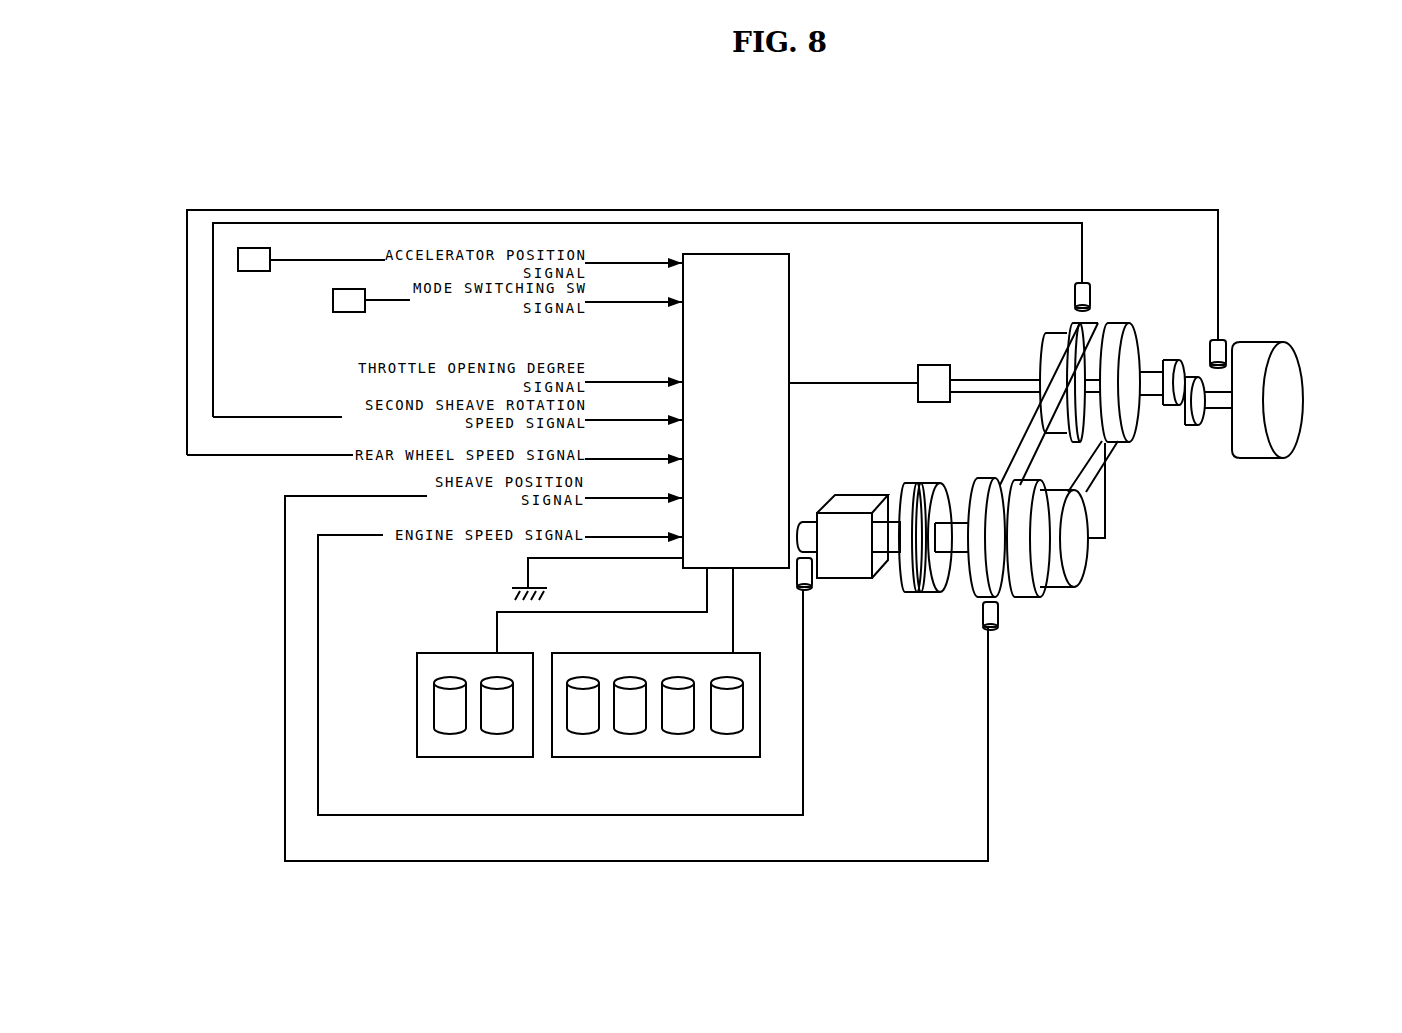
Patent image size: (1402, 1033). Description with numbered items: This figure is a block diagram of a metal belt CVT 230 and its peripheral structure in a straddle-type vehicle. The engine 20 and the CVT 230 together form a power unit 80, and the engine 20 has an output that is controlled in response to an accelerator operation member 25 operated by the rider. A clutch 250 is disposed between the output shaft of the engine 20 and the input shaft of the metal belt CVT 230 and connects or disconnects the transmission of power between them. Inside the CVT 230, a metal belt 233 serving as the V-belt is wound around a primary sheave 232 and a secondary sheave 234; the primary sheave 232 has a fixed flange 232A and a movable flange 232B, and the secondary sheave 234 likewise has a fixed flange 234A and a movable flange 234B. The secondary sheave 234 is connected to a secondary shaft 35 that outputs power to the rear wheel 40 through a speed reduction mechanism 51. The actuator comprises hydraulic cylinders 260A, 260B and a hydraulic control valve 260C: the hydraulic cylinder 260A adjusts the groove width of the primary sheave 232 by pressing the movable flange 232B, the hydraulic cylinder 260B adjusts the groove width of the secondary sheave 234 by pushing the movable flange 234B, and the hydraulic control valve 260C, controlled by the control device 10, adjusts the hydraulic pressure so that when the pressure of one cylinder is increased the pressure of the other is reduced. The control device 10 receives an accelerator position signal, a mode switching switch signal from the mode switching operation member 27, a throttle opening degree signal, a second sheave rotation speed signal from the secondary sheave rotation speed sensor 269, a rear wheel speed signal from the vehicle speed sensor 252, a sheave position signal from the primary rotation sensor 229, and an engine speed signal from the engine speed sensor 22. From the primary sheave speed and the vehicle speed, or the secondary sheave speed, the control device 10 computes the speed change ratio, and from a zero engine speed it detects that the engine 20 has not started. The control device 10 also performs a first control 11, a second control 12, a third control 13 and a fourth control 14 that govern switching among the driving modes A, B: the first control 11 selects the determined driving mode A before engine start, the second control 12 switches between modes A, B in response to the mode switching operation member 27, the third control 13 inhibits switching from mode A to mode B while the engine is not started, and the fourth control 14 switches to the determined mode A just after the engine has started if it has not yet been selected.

The control device 10 is at (789, 265).
The engine 20 is at (842, 578).
The engine speed sensor 22 is at (790, 578).
The accelerator operation member 25 is at (250, 271).
The mode switching operation member 27 is at (352, 288).
The secondary shaft 35 is at (1172, 398).
The rear wheel 40 is at (1300, 416).
The speed reduction mechanism 51 is at (1192, 428).
The power unit 80 is at (1057, 496).
The primary rotation sensor 229 is at (1000, 622).
The metal belt CVT 230 is at (1035, 496).
The primary sheave 232 is at (1060, 582).
The fixed flange of primary sheave 232A is at (970, 597).
The movable flange of primary sheave 232B is at (1057, 600).
The metal belt 233 is at (1100, 480).
The secondary sheave 234 is at (1035, 337).
The fixed flange of secondary sheave 234A is at (1127, 320).
The movable flange of secondary sheave 234B is at (1068, 322).
The clutch 250 is at (912, 592).
The vehicle speed sensor 252 is at (1228, 350).
The hydraulic cylinder 260A is at (1088, 563).
The hydraulic cylinder 260B is at (1040, 360).
The hydraulic control valve 260C is at (932, 365).
The secondary sheave rotation speed sensor 269 is at (1075, 292).
The determined driving mode A is at (450, 730).
The other driving mode B is at (497, 730).
The first control 11 is at (583, 730).
The second control 12 is at (630, 730).
The third control 13 is at (678, 730).
The fourth control 14 is at (727, 730).